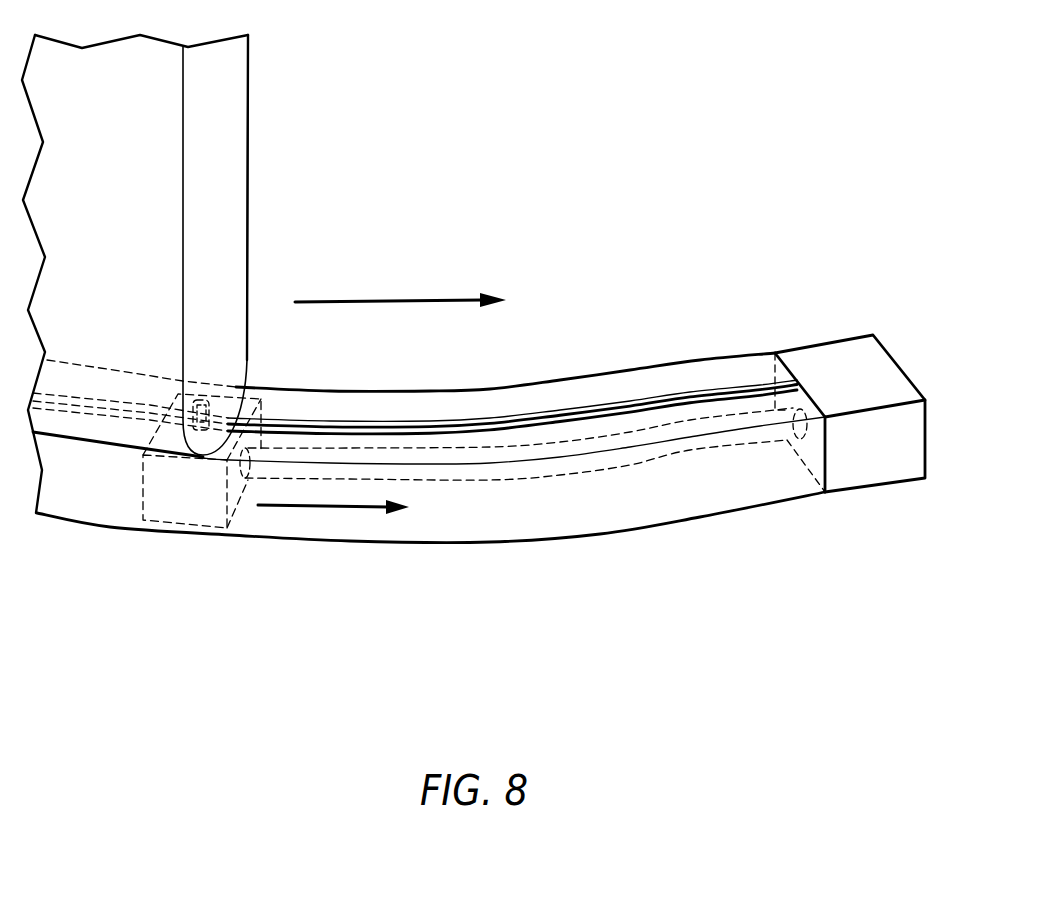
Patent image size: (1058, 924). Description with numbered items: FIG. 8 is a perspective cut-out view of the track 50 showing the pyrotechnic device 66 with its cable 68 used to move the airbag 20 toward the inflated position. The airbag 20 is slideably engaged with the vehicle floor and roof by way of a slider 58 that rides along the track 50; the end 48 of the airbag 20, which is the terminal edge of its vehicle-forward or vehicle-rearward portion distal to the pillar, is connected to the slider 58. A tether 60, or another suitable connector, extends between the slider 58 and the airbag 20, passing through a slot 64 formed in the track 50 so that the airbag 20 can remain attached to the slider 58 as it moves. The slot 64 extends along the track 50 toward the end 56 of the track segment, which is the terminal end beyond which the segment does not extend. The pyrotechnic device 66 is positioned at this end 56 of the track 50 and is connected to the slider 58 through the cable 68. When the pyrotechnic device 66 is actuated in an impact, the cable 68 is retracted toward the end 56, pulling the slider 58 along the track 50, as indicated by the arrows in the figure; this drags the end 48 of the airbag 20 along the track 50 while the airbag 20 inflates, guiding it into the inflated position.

The airbag 20 is at (263, 126).
The end 48 is at (232, 213).
The track 50 is at (482, 540).
The end 56 is at (827, 453).
The slider 58 is at (182, 497).
The tether 60 is at (218, 388).
The slot 64 is at (622, 405).
The pyrotechnic device 66 is at (842, 365).
The cable 68 is at (687, 457).